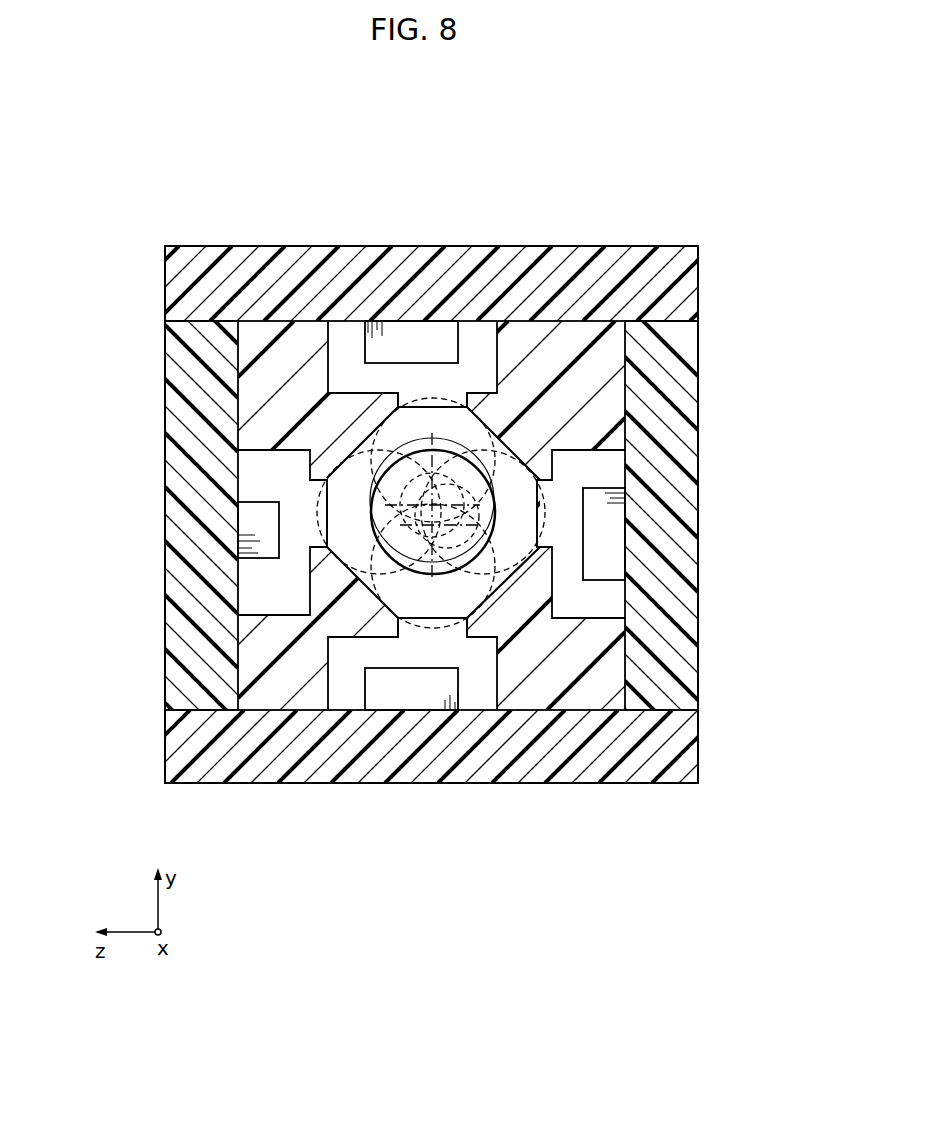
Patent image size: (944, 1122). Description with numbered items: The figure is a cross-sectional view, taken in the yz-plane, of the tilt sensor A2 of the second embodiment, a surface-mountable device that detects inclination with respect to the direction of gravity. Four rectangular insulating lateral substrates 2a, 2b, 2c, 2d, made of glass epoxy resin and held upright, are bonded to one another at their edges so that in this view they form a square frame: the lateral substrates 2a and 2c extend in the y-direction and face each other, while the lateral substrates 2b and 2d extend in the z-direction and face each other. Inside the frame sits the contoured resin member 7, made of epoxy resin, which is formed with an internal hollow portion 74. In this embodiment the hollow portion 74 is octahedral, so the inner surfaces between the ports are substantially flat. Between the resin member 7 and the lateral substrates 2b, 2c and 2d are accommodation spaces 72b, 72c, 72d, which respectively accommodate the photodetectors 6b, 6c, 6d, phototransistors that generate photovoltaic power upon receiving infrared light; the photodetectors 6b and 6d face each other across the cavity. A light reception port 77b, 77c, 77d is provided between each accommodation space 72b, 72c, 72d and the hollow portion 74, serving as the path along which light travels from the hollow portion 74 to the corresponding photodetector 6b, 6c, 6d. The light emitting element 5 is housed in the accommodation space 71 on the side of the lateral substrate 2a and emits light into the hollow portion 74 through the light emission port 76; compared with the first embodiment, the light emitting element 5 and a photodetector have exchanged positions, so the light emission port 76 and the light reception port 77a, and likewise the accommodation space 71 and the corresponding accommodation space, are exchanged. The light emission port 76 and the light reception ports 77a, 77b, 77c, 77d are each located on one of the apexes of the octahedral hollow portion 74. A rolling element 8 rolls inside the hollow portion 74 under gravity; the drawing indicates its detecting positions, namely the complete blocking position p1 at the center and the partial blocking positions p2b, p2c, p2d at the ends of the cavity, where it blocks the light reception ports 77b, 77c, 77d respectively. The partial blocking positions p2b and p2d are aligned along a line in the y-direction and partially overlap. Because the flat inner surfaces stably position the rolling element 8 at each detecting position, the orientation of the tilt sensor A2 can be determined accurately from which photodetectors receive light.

The tilt sensor A2 is at (118, 205).
The lateral substrate 2a is at (213, 480).
The lateral substrate 2b is at (245, 275).
The lateral substrate 2c is at (670, 523).
The lateral substrate 2d is at (265, 740).
The light emitting element 5 is at (238, 533).
The photodetector 6b is at (410, 336).
The photodetector 6c is at (610, 558).
The photodetector 6d is at (410, 695).
The resin member 7 is at (565, 385).
The rolling element 8 is at (595, 378).
The accommodation space 71 is at (245, 597).
The accommodation space 72b is at (348, 334).
The accommodation space 72c is at (610, 607).
The accommodation space 72d is at (345, 695).
The hollow portion 74 is at (497, 548).
The light emission port 76 is at (308, 488).
The light reception port 77a is at (405, 475).
The light reception port 77b is at (450, 388).
The light reception port 77c is at (556, 486).
The light reception port 77d is at (452, 645).
The complete blocking position p1 is at (432, 505).
The partial blocking position p2b is at (473, 488).
The partial blocking position p2c is at (490, 462).
The partial blocking position p2d is at (495, 533).